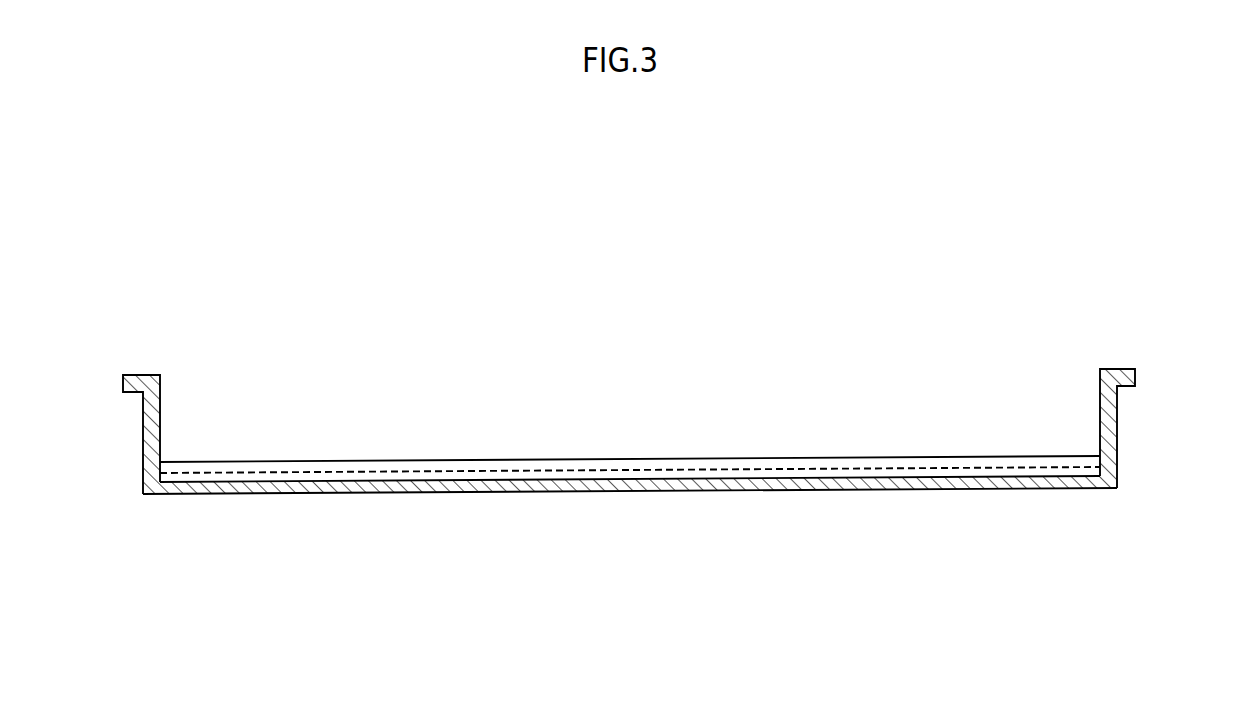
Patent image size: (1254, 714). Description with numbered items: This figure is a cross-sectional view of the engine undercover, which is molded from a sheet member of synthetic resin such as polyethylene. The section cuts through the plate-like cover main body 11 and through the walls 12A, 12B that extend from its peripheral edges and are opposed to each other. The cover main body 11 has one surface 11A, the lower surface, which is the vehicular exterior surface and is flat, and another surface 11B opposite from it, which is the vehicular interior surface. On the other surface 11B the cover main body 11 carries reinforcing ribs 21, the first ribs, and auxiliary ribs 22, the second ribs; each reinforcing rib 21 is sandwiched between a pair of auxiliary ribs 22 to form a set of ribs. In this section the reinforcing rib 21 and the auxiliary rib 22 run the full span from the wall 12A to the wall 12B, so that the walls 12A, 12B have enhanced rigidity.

The cover main body 11 is at (630, 481).
The one surface 11A is at (490, 493).
The other surface 11B is at (528, 480).
The wall 12A is at (1108, 413).
The wall 12B is at (150, 430).
The reinforcing rib 21 is at (319, 468).
The auxiliary rib 22 is at (397, 475).